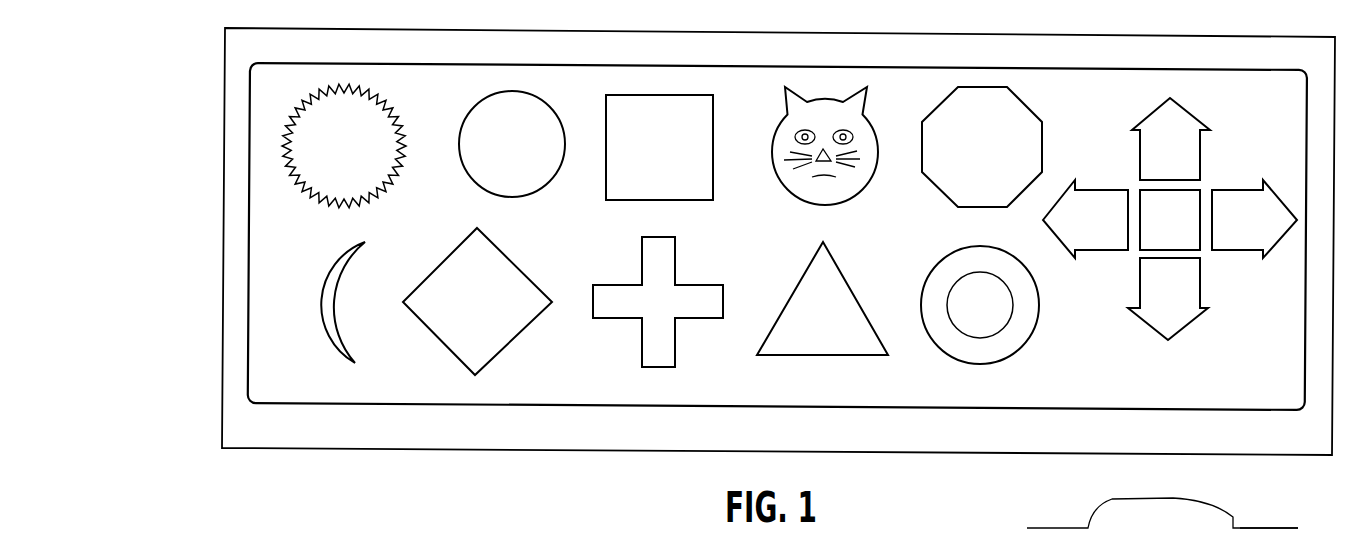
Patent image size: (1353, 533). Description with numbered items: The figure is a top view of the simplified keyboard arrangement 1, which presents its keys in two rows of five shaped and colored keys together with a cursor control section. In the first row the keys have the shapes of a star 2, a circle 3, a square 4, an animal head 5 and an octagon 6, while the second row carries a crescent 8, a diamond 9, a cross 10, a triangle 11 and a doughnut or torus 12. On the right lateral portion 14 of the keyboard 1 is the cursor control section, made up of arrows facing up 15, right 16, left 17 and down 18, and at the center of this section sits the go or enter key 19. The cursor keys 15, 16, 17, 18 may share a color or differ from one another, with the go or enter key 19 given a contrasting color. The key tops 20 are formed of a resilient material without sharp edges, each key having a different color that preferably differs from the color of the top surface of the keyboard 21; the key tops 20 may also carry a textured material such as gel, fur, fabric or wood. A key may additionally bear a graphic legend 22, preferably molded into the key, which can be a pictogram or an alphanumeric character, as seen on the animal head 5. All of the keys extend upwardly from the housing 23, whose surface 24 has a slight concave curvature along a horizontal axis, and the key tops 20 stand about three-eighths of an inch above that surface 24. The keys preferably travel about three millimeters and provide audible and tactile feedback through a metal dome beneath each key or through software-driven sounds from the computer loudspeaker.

The simplified keyboard arrangement 1 is at (291, 450).
The star key 2 is at (335, 160).
The circle key 3 is at (503, 158).
The square key 4 is at (651, 160).
The animal head key 5 is at (819, 124).
The octagon key 6 is at (973, 161).
The crescent key 8 is at (297, 316).
The diamond key 9 is at (466, 316).
The cross key 10 is at (644, 317).
The triangle key 11 is at (807, 319).
The doughnut or torus key 12 is at (964, 319).
The right lateral portion 14 is at (1156, 382).
The up arrow key 15 is at (1154, 164).
The right arrow key 16 is at (1234, 234).
The left arrow key 17 is at (1084, 234).
The down arrow key 18 is at (1154, 299).
The go or enter key 19 is at (1154, 234).
The key tops 20 is at (1110, 522).
The top surface of the keyboard 21 is at (382, 383).
The graphic legend 22 is at (836, 156).
The housing 23 is at (225, 155).
The surface 24 is at (1276, 528).